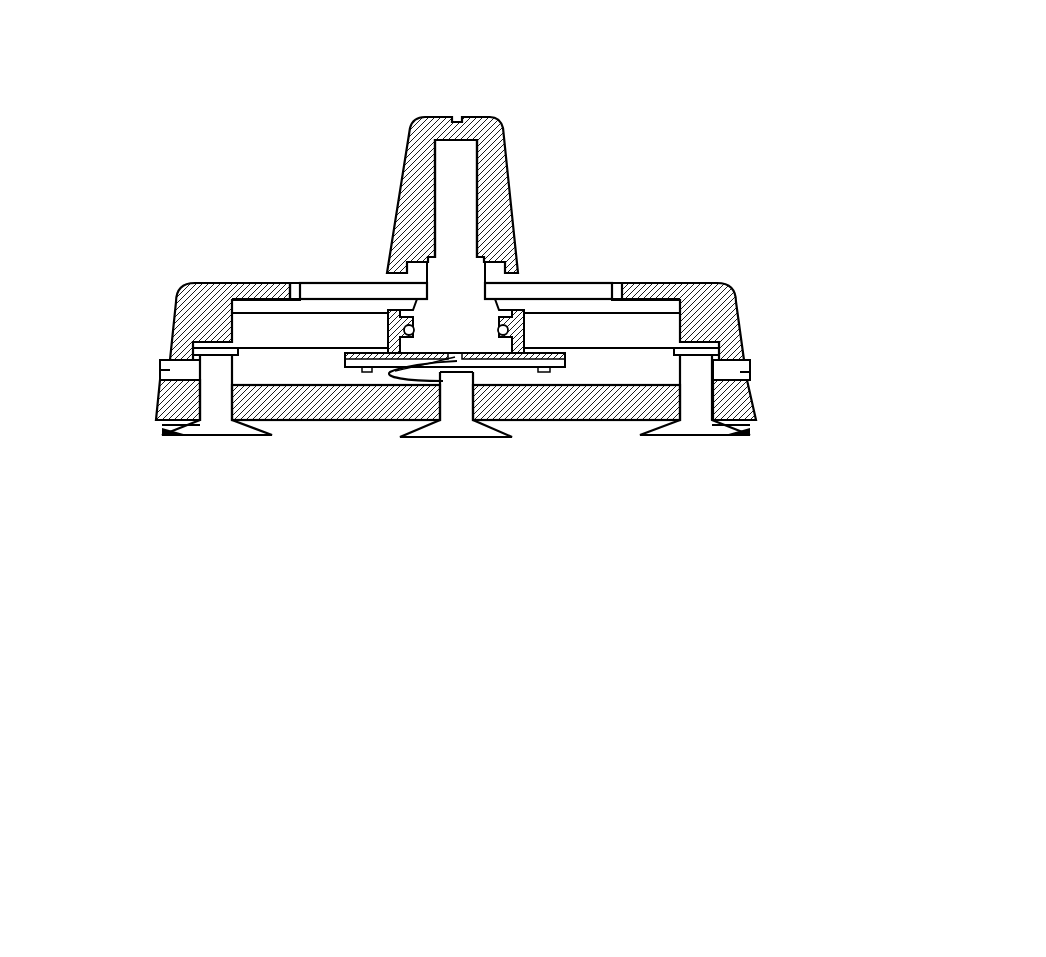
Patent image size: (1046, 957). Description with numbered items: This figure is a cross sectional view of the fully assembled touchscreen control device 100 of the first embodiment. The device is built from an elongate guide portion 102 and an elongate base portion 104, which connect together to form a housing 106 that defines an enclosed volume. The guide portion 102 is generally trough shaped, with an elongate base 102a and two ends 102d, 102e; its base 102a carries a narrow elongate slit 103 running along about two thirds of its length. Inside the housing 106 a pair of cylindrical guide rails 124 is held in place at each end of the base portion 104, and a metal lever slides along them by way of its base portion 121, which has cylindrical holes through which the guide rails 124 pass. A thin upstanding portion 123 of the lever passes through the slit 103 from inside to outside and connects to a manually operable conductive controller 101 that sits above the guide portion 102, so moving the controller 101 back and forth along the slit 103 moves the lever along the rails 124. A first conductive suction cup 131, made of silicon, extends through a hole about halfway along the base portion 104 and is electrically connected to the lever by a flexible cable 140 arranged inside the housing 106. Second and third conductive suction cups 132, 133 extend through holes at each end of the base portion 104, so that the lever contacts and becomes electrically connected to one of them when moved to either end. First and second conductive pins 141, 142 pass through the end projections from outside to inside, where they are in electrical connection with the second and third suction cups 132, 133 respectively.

The touchscreen control device 100 is at (722, 38).
The manually operable conductive controller 101 is at (492, 123).
The elongate guide portion 102 is at (747, 286).
The elongate base 102a is at (268, 293).
The end of guide portion 102d is at (185, 318).
The end of guide portion 102e is at (726, 318).
The narrow elongate slit 103 is at (370, 291).
The elongate base portion 104 is at (780, 419).
The housing 106 is at (730, 228).
The base portion of metal lever 121 is at (470, 330).
The thin upstanding portion 123 is at (463, 200).
The cylindrical guide rails 124 is at (632, 327).
The first conductive suction cup 131 is at (460, 424).
The second conductive suction cup 132 is at (215, 435).
The third conductive suction cup 133 is at (670, 432).
The flexible cable 140 is at (372, 376).
The first conductive pin 141 is at (165, 375).
The second conductive pin 142 is at (738, 372).